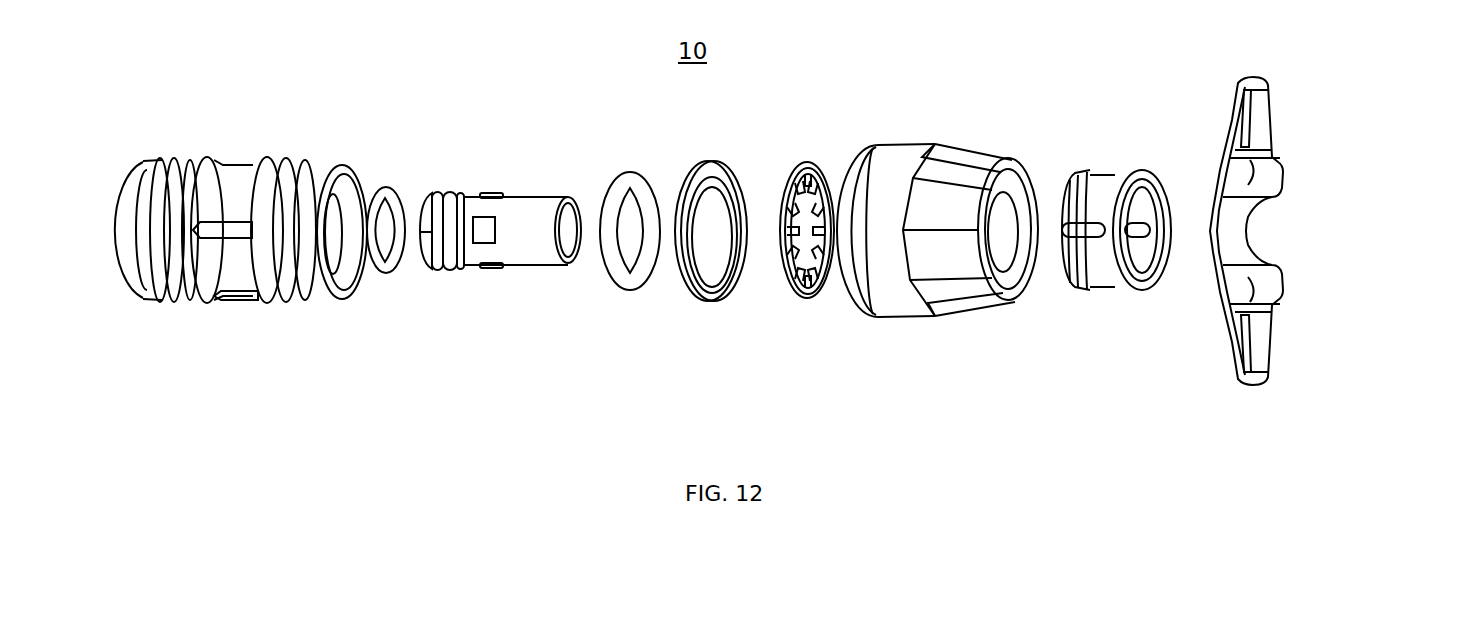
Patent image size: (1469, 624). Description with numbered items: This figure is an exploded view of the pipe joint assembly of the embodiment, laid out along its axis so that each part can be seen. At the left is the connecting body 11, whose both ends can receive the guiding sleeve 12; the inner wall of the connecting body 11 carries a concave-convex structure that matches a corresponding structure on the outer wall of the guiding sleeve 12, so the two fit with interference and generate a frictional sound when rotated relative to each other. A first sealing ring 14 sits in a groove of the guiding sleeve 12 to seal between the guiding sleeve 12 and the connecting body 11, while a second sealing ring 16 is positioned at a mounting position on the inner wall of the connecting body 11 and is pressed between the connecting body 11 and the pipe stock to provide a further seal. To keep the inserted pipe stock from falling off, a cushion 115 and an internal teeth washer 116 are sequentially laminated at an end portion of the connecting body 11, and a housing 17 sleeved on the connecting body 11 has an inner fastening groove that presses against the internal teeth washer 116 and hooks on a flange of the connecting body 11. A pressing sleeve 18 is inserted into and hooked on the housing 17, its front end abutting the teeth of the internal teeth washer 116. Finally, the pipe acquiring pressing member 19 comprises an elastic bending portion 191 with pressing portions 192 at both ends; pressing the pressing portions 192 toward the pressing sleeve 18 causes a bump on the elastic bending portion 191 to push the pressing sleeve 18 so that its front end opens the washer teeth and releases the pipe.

The connecting body 11 is at (229, 285).
The guiding sleeve 12 is at (510, 249).
The first sealing ring 14 is at (377, 282).
The second sealing ring 16 is at (605, 265).
The cushion 115 is at (693, 278).
The internal teeth washer 116 is at (789, 282).
The housing 17 is at (880, 290).
The pressing sleeve 18 is at (1106, 272).
The pipe acquiring pressing member 19 is at (1334, 231).
The elastic bending portion 191 is at (1243, 227).
The pressing portion 192 is at (1304, 324).